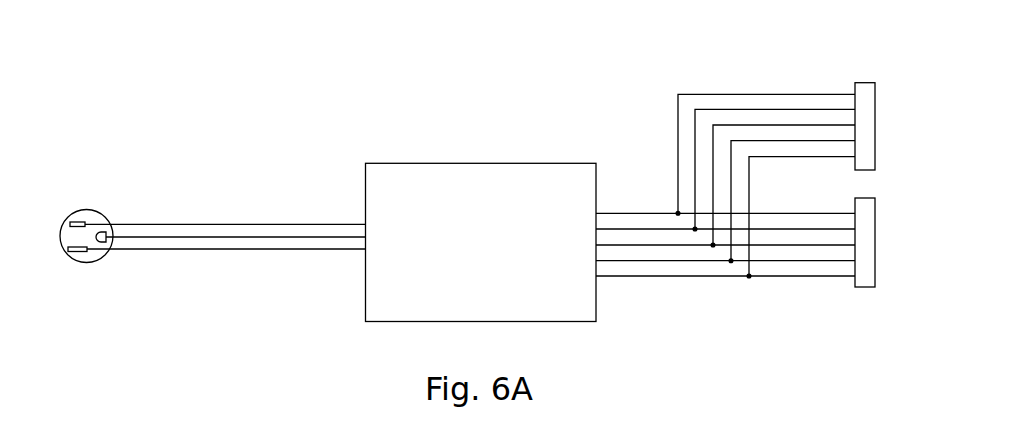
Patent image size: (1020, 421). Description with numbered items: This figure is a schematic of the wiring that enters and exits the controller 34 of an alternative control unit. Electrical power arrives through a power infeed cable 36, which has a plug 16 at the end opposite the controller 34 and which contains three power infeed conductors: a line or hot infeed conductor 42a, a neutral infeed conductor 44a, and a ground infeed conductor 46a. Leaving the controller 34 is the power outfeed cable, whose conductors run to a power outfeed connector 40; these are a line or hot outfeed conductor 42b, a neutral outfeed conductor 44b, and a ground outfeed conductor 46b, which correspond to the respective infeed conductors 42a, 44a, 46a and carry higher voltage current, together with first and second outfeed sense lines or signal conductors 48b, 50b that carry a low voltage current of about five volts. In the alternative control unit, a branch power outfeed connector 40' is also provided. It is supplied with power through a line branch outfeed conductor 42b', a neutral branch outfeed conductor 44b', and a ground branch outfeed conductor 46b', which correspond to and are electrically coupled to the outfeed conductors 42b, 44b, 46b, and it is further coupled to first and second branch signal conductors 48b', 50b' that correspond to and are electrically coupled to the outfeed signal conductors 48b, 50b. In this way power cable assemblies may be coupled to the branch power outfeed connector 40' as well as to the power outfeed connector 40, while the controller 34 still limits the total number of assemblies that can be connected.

The plug 16 is at (93, 209).
The controller 34 is at (402, 162).
The power infeed cable 36 is at (148, 290).
The power outfeed connector 40 is at (821, 298).
The branch power outfeed connector 40' is at (841, 90).
The line infeed conductor 42a is at (208, 222).
The neutral infeed conductor 44a is at (222, 251).
The ground infeed conductor 46a is at (245, 233).
The line outfeed conductor 42b is at (698, 192).
The neutral outfeed conductor 44b is at (684, 245).
The ground outfeed conductor 46b is at (691, 214).
The first outfeed signal conductor 48b is at (725, 302).
The second outfeed signal conductor 50b is at (725, 295).
The line branch outfeed conductor 42b' is at (720, 137).
The neutral branch outfeed conductor 44b' is at (783, 156).
The ground branch outfeed conductor 46b' is at (720, 166).
The first branch outfeed signal conductor 48b' is at (727, 195).
The second branch outfeed signal conductor 50b' is at (736, 217).